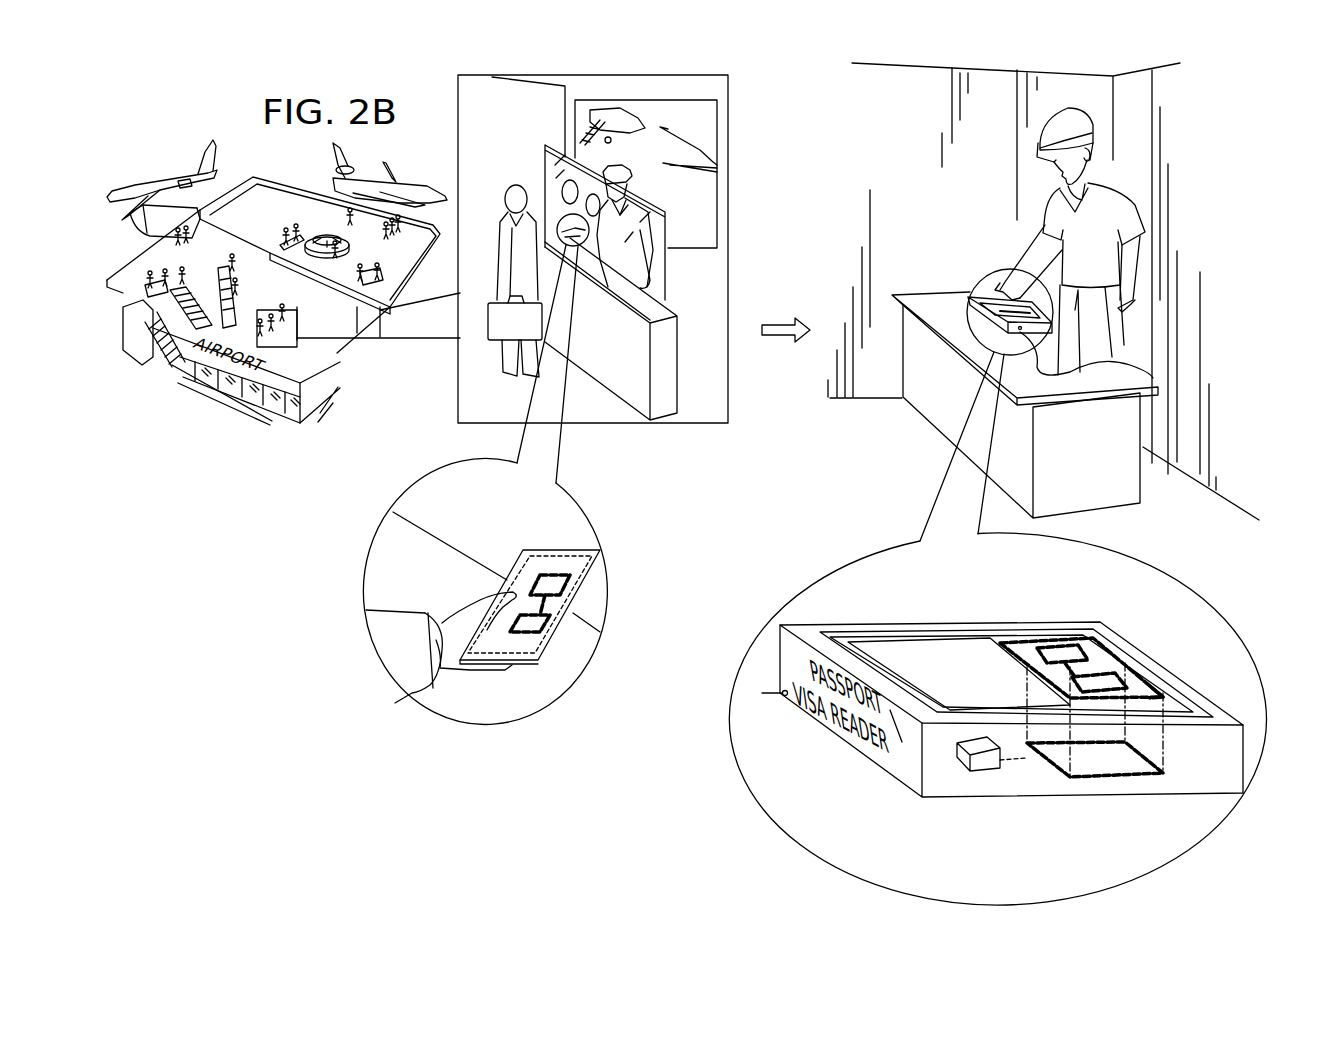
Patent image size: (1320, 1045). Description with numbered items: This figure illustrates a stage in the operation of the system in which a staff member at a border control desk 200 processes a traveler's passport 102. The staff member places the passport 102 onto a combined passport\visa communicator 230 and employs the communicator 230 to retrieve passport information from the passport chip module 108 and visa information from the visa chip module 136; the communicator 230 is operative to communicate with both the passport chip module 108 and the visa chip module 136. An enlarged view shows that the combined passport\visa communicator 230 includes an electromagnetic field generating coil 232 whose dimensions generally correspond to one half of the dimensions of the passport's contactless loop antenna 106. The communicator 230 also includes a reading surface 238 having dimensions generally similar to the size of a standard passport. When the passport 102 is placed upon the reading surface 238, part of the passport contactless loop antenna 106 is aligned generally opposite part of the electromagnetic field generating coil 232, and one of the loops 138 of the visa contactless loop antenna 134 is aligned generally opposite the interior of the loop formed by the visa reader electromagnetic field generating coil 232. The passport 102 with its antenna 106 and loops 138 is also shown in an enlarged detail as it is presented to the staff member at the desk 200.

The passport 102 is at (503, 558).
The contactless loop antenna 106 is at (587, 550).
The passport chip module 108 is at (1163, 697).
The visa contactless loop antenna 134 is at (563, 607).
The visa chip module 136 is at (1060, 663).
The loops 138 is at (1015, 642).
The border control desk 200 is at (615, 380).
The combined passport\visa communicator 230 is at (973, 307).
The electromagnetic field generating coil 232 is at (1107, 777).
The reading surface 238 is at (840, 640).